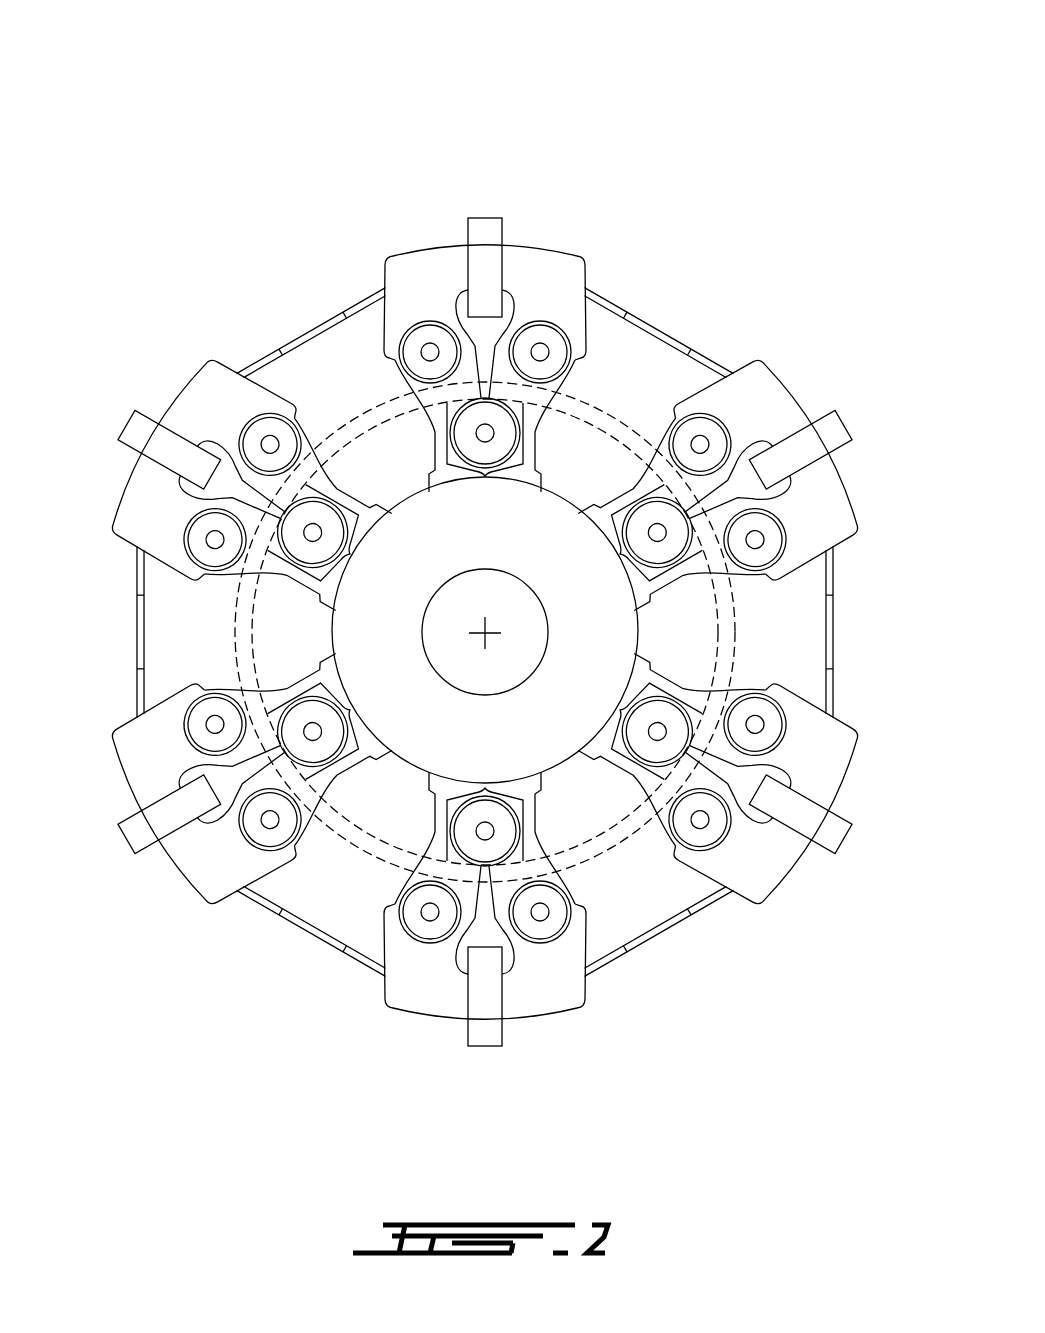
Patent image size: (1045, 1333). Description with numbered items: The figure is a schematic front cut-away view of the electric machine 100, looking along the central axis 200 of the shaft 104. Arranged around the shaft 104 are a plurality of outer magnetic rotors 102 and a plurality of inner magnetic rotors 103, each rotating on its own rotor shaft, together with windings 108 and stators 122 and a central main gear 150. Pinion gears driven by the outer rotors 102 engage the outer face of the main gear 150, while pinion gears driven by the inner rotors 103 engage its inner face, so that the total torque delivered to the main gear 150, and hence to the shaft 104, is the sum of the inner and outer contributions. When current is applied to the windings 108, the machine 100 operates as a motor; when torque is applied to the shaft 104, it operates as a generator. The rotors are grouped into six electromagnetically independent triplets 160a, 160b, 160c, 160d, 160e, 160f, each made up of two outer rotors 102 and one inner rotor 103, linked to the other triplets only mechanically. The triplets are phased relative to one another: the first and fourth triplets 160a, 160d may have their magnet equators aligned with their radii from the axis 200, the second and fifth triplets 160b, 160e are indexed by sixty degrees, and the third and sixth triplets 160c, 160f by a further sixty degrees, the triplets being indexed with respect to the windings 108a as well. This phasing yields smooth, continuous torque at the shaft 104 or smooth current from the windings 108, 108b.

The electric machine 100 is at (158, 132).
The outer magnetic rotors 102 is at (712, 414).
The inner magnetic rotors 103 is at (678, 690).
The shaft 104 is at (485, 592).
The windings 108 is at (483, 232).
The windings 108a is at (150, 835).
The pin 108b is at (490, 1033).
The stators 122 is at (293, 692).
The main gear 150 is at (350, 398).
The first rotor triplet 160a is at (169, 810).
The second rotor triplet 160b is at (485, 1014).
The third rotor triplet 160c is at (804, 810).
The fourth rotor triplet 160d is at (807, 454).
The fifth rotor triplet 160e is at (485, 251).
The sixth rotor triplet 160f is at (165, 454).
The axis 200 is at (487, 640).